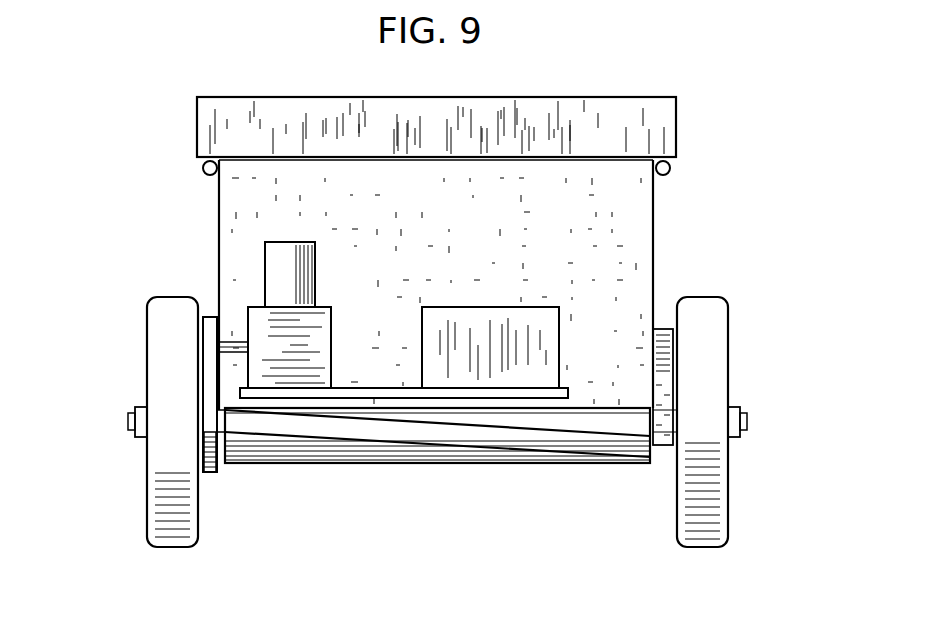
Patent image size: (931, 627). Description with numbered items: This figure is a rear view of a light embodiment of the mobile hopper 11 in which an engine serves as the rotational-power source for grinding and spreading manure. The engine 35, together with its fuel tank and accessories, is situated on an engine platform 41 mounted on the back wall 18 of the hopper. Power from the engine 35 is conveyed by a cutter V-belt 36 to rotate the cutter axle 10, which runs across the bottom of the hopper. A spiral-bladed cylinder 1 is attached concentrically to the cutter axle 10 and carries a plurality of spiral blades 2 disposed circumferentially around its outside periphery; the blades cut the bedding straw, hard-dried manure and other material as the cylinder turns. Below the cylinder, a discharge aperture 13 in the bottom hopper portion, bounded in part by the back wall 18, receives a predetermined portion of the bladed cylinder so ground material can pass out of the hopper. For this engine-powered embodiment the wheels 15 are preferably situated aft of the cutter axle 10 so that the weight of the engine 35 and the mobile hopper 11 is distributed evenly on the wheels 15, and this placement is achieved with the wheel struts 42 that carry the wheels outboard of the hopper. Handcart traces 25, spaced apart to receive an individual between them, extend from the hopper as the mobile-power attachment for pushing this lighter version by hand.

The mobile hopper 11 is at (710, 83).
The handcart traces 25 is at (202, 166).
The back wall 18 is at (512, 232).
The engine 35 is at (265, 305).
The cutter V-belt 36 is at (210, 385).
The wheels 15 is at (703, 312).
The cutter axle 10 is at (130, 418).
The wheel struts 42 is at (660, 370).
The engine platform 41 is at (318, 392).
The discharge aperture 13 is at (433, 408).
The spiral-bladed cylinder 1 is at (468, 428).
The spiral blades 2 is at (522, 428).